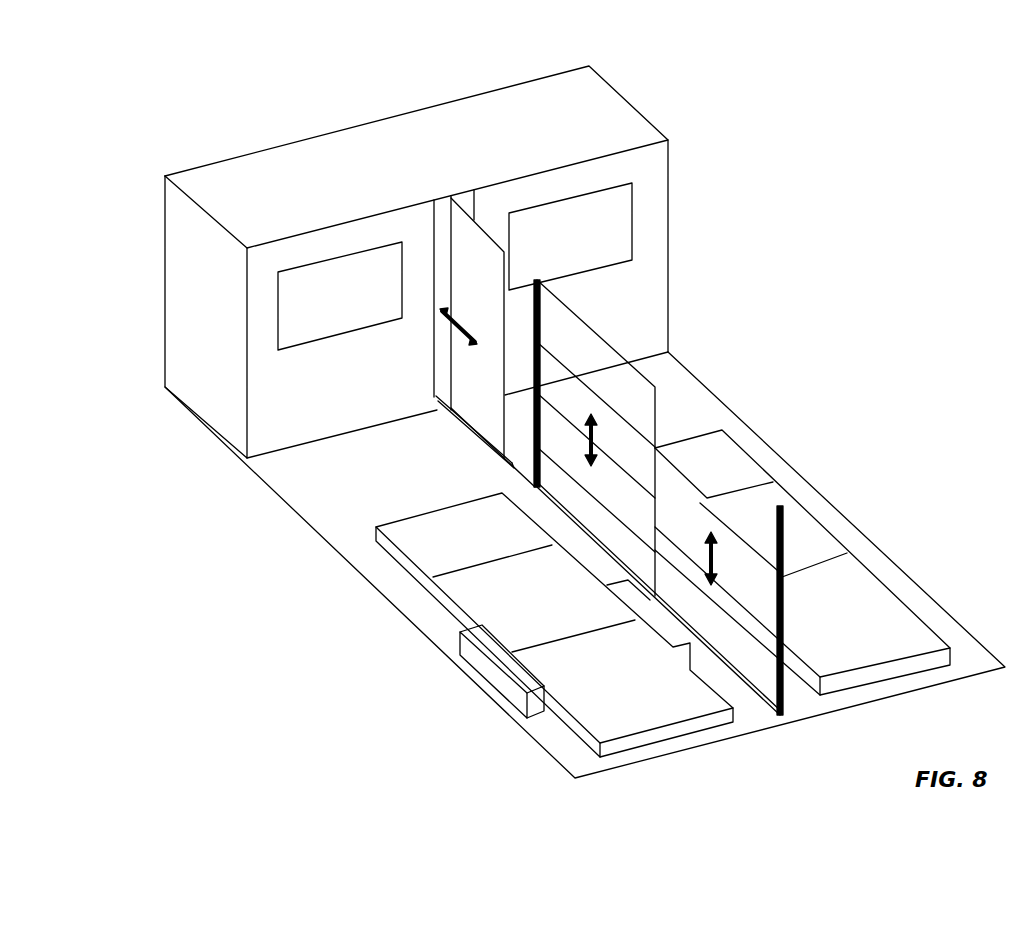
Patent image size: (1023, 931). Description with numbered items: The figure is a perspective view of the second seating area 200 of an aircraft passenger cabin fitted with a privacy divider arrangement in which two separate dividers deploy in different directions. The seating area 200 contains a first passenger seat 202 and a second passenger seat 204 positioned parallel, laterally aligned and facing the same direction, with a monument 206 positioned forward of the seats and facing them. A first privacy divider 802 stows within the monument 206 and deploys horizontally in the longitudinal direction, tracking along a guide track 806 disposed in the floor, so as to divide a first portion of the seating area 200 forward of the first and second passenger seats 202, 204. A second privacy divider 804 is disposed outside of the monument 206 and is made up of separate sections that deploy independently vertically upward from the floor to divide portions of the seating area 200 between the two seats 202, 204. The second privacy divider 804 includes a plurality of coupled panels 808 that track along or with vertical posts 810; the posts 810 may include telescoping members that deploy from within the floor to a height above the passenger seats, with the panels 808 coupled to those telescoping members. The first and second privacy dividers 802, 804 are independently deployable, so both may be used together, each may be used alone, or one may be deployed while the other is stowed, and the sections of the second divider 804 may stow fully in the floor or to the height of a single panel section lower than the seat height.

The second seating area 200 is at (732, 383).
The first passenger seat 202 is at (542, 667).
The second passenger seat 204 is at (870, 604).
The monument 206 is at (588, 113).
The first privacy divider 802 is at (462, 217).
The second privacy divider 804 is at (656, 383).
The guide track 806 is at (465, 437).
The coupled panels 808 is at (647, 406).
The vertical posts 810 is at (786, 712).